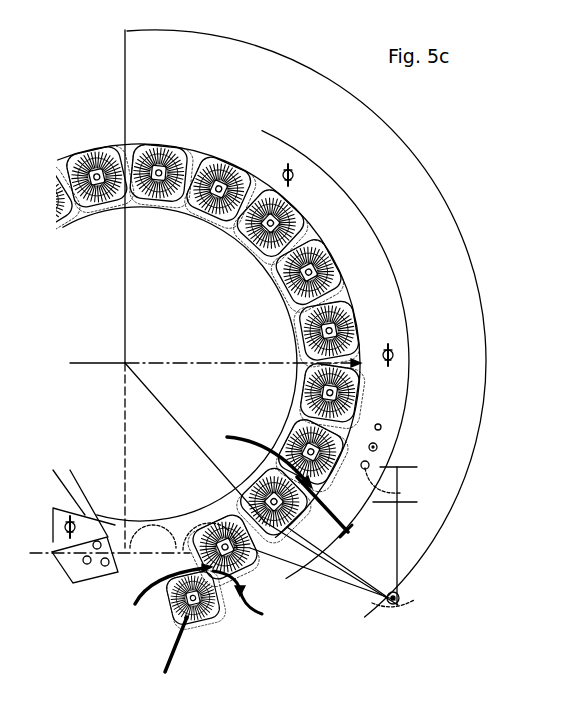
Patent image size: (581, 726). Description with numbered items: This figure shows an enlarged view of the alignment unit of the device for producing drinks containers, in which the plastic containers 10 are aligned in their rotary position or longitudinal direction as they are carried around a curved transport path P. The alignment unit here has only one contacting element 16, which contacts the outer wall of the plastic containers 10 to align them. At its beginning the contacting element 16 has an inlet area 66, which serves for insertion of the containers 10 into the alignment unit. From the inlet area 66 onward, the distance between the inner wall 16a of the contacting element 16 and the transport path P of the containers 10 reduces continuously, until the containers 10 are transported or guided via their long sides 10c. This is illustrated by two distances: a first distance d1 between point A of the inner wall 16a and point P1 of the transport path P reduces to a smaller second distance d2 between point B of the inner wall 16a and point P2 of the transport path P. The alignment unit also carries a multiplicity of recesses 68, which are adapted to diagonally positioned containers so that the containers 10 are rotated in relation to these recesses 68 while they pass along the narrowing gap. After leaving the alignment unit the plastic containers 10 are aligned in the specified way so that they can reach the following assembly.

The containers 10 is at (367, 331).
The long sides 10c is at (300, 208).
The contacting element 16 is at (357, 238).
The inner wall 16a is at (290, 387).
The recesses 68 is at (290, 300).
The inlet area 66 is at (397, 580).
The transport path P is at (169, 661).
The point of the transport path P1 is at (152, 612).
The point of the transport path P2 is at (257, 449).
The point of the inner wall A is at (253, 585).
The point of the inner wall B is at (327, 487).
The distance d1 is at (271, 641).
The distance d2 is at (341, 516).